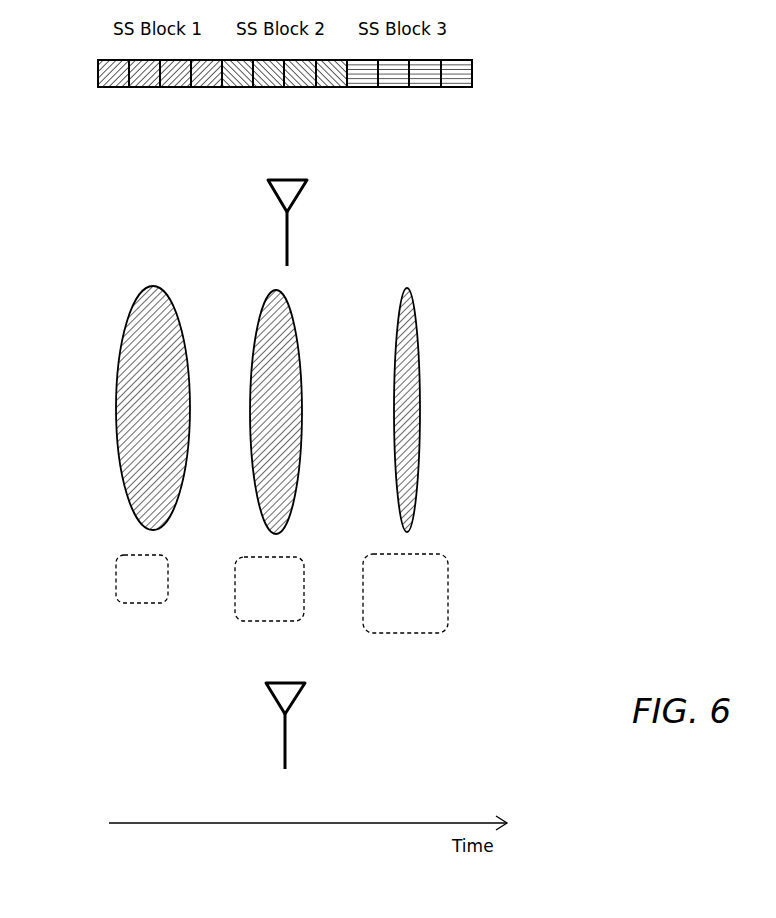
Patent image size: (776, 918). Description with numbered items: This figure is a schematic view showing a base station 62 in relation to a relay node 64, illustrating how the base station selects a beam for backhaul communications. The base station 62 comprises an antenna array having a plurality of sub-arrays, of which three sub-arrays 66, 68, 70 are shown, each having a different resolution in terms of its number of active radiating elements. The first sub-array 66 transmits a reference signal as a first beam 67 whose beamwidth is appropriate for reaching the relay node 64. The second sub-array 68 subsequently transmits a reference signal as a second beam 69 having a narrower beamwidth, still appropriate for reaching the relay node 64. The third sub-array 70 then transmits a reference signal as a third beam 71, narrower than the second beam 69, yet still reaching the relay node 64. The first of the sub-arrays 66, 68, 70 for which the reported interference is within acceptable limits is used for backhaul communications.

The base station 62 is at (295, 703).
The relay node 64 is at (293, 208).
The first sub-array 66 is at (150, 592).
The first beam 67 is at (117, 422).
The second sub-array 68 is at (282, 600).
The second beam 69 is at (302, 410).
The third sub-array 70 is at (417, 604).
The third beam 71 is at (420, 411).